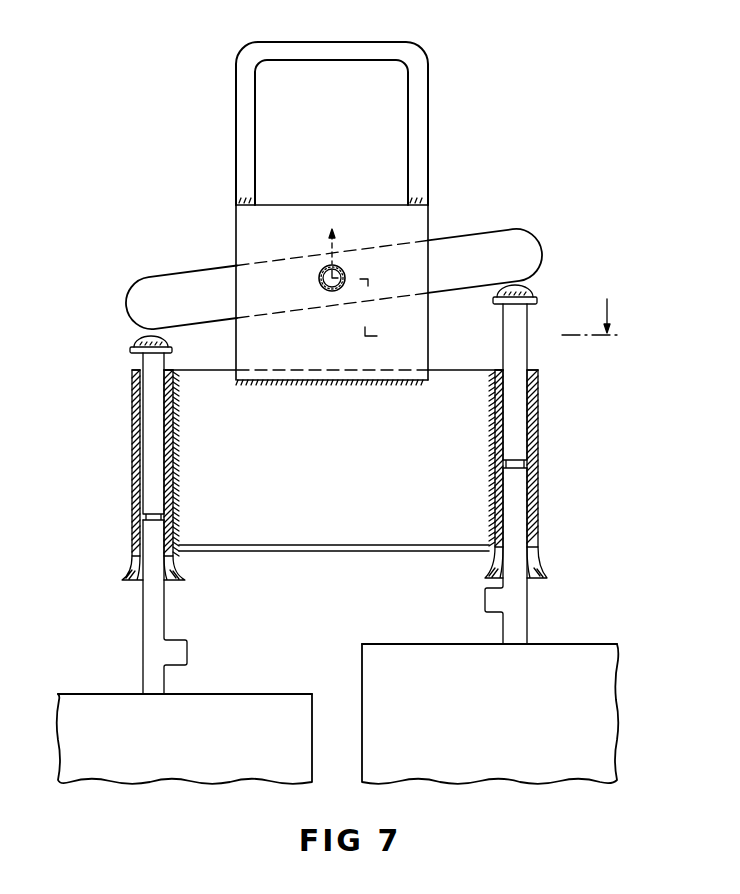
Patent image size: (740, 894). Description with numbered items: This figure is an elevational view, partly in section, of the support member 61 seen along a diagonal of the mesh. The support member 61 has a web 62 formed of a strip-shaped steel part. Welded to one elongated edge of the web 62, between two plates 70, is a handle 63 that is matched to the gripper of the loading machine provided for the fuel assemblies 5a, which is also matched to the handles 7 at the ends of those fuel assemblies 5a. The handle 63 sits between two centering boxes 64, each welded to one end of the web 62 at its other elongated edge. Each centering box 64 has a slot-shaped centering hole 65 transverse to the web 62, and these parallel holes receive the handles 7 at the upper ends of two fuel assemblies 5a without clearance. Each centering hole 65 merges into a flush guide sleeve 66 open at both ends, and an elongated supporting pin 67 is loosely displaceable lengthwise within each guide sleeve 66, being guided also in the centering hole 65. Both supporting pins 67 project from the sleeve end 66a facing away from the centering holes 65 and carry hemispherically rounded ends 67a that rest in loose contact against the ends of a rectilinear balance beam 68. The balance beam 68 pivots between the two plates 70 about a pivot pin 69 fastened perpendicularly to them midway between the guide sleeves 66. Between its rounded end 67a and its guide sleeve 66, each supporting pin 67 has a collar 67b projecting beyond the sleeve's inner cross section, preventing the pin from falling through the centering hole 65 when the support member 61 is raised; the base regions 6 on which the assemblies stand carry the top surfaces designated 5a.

The handle 63 is at (378, 45).
The plates 70 is at (292, 207).
The support member 61 is at (236, 240).
The balance beam 68 is at (168, 285).
The pivot pin 69 is at (319, 278).
The hemispherically rounded ends of the supporting pins 67a is at (143, 338).
The collar 67b is at (130, 350).
The supporting pin 67 is at (148, 361).
The end of the guide sleeve 66a is at (134, 371).
The guide sleeve 66 is at (134, 423).
The centering box 64 is at (134, 495).
The centering hole 65 is at (137, 580).
The handle 7 is at (156, 620).
The fuel assembly 5a is at (102, 694).
The base 6 is at (78, 726).
The web 62 is at (290, 551).